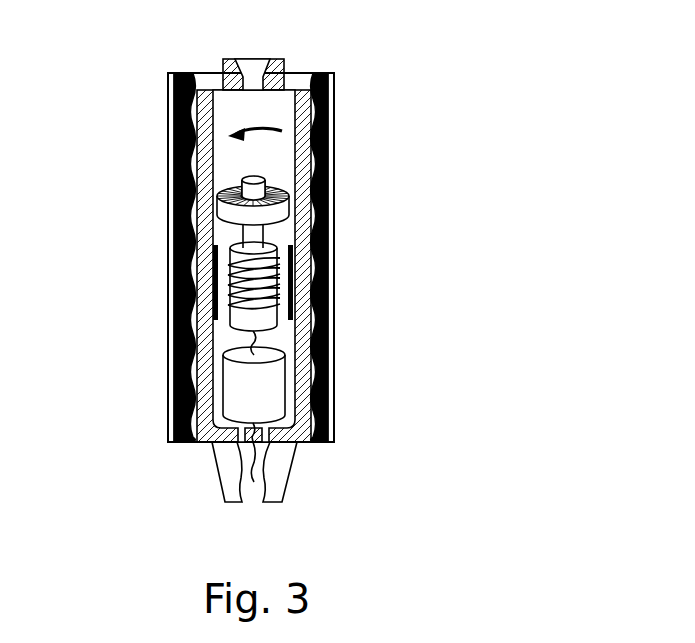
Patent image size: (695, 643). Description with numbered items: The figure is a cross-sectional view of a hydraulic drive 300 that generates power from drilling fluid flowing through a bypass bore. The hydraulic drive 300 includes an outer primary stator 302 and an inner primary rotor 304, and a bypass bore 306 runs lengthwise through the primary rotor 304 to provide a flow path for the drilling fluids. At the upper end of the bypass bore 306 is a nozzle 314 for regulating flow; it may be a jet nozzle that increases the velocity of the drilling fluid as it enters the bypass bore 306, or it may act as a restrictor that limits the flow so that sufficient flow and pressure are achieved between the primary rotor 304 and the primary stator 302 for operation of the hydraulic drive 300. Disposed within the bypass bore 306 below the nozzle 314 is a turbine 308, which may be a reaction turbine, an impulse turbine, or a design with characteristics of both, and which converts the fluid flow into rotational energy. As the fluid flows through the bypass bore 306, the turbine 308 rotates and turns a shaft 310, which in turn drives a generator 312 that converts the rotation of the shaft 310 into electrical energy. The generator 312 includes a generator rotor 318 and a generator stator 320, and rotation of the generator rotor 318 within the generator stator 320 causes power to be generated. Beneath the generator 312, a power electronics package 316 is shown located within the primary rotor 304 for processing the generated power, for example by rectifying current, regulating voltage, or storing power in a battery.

The hydraulic drive 300 is at (468, 41).
The primary stator 302 is at (330, 413).
The primary rotor 304 is at (302, 378).
The bypass bore 306 is at (282, 103).
The turbine 308 is at (283, 208).
The shaft 310 is at (258, 236).
The generator 312 is at (158, 245).
The nozzle 314 is at (232, 75).
The power electronics package 316 is at (237, 393).
The generator rotor 318 is at (257, 315).
The generator stator 320 is at (293, 295).